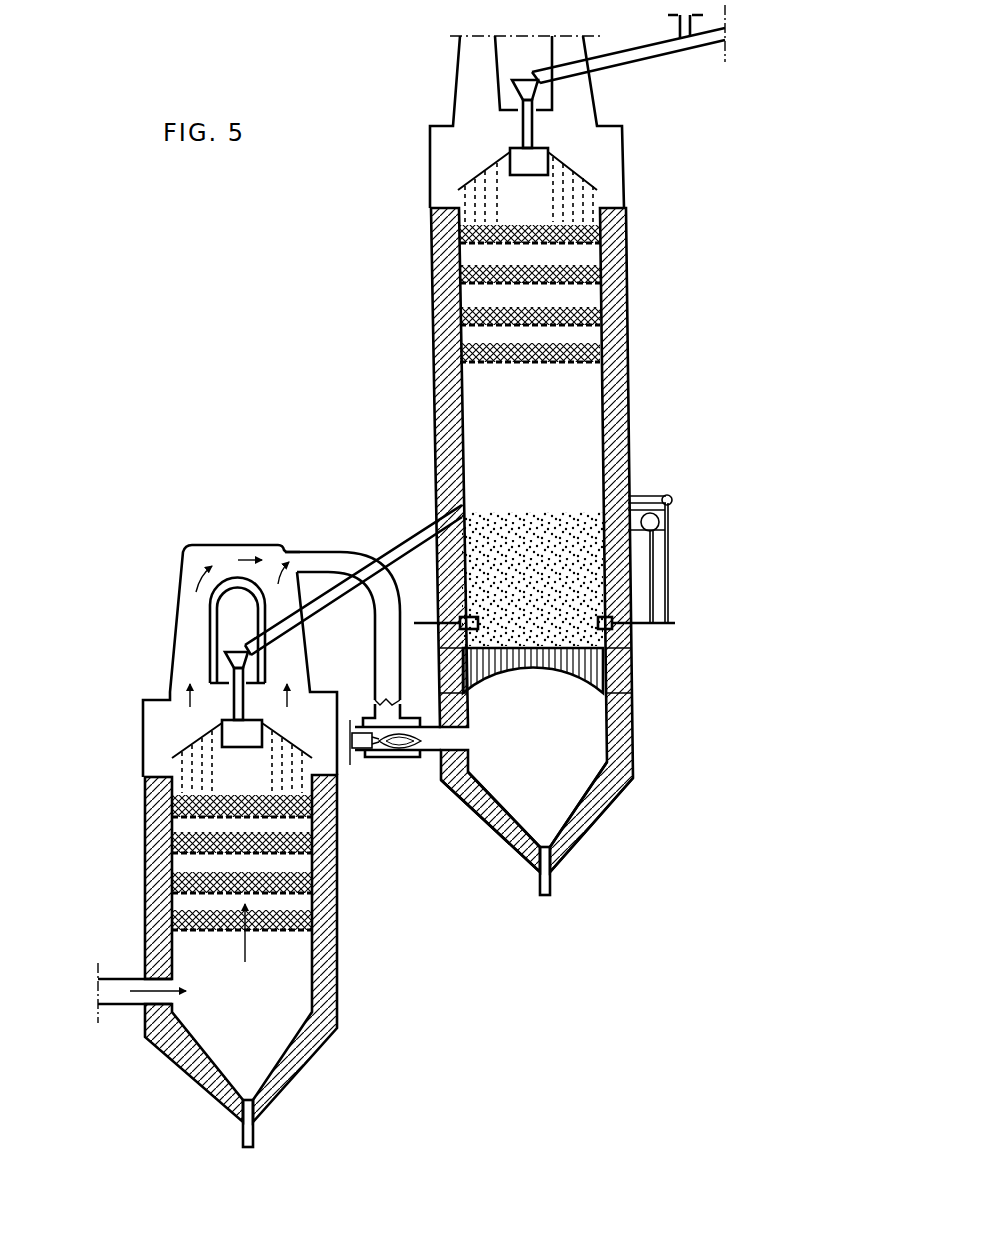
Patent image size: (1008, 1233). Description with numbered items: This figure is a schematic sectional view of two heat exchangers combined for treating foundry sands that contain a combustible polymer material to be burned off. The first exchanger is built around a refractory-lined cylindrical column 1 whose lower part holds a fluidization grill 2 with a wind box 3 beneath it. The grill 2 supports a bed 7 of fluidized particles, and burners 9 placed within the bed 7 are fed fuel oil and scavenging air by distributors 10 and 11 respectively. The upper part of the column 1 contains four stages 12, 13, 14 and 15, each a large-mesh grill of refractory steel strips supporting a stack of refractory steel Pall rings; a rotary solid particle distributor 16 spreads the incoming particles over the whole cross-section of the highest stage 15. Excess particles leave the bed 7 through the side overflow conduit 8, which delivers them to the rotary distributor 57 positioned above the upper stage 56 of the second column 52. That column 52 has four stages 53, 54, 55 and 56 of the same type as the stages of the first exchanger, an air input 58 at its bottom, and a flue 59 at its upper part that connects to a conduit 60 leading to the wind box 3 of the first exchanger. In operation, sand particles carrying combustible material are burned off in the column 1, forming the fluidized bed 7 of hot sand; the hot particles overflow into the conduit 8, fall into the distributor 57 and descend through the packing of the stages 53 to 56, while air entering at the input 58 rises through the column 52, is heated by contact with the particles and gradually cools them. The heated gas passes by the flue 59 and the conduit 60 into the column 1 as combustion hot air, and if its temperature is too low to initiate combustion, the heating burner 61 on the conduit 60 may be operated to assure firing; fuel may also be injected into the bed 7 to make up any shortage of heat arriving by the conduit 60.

The cylindrical column 1 is at (630, 412).
The fluidization grill 2 is at (577, 667).
The wind box 3 is at (573, 780).
The bed of fluidized particles 7 is at (546, 530).
The side overflow conduit 8 is at (407, 549).
The burners 9 is at (476, 620).
The distributor 10 is at (672, 497).
The distributor 11 is at (656, 527).
The stage 12 is at (602, 350).
The stage 13 is at (602, 312).
The stage 14 is at (602, 268).
The stage 15 is at (602, 233).
The rotary solid particle distributor 16 is at (523, 163).
The second column 52 is at (340, 912).
The stage 53 is at (173, 933).
The stage 54 is at (172, 893).
The stage 55 is at (172, 853).
The stage 56 is at (178, 808).
The rotary distributor 57 is at (232, 737).
The air input 58 is at (125, 983).
The flue 59 is at (184, 554).
The conduit 60 is at (388, 661).
The heating burner 61 is at (385, 753).